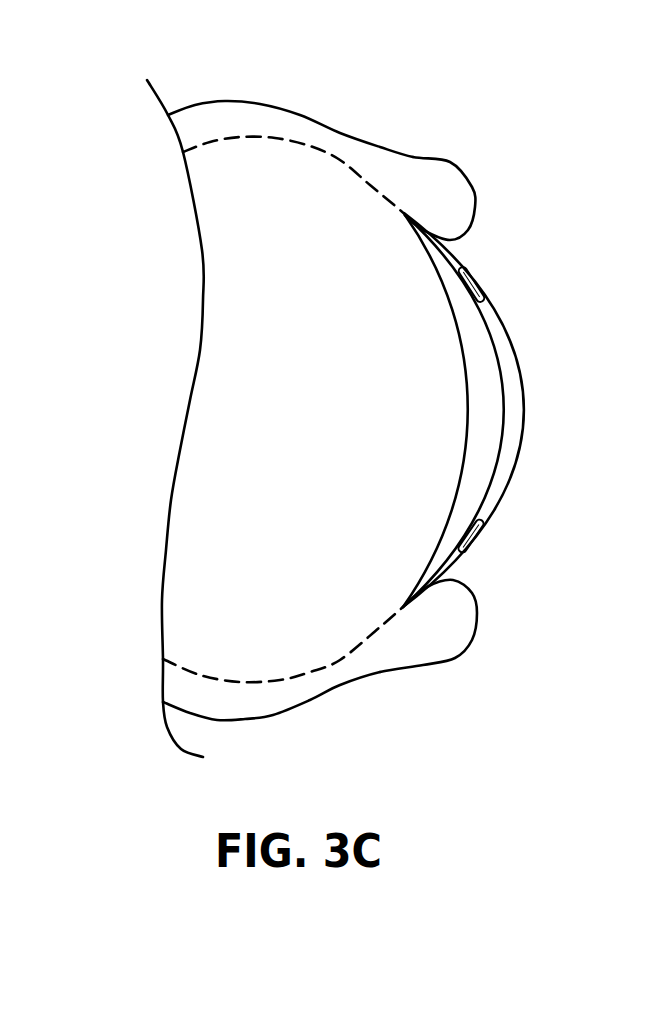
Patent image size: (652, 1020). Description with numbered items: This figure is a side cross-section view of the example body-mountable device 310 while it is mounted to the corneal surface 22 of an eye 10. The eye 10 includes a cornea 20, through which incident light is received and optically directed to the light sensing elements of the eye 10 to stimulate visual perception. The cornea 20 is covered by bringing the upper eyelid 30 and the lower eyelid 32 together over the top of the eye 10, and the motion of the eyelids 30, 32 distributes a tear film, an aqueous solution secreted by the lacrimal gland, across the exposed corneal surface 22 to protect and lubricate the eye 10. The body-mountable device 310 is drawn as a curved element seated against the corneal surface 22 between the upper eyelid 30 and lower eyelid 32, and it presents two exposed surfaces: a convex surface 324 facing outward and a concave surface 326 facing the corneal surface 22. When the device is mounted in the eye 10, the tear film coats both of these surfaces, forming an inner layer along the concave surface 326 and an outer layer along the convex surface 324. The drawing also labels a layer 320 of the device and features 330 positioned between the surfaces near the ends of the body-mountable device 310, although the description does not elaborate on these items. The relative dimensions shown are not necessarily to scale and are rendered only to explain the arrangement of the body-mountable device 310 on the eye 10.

The eye 10 is at (376, 698).
The upper eyelid 30 is at (474, 183).
The lower eyelid 32 is at (476, 606).
The body-mountable device 310 is at (525, 410).
The cornea 20 is at (486, 444).
The corneal surface 22 is at (497, 411).
The inner layer 320 is at (495, 500).
The convex surface 324 is at (522, 355).
The concave surface 326 is at (502, 411).
The attachment pad 330 is at (481, 272).